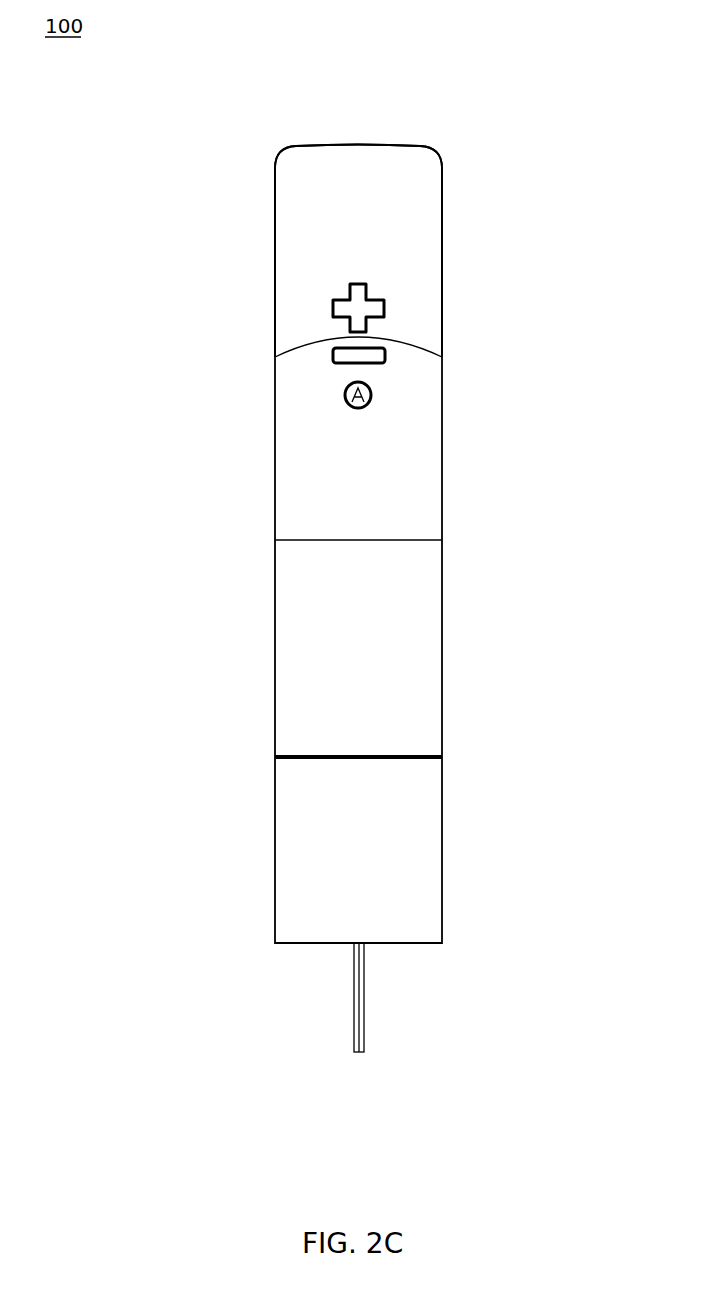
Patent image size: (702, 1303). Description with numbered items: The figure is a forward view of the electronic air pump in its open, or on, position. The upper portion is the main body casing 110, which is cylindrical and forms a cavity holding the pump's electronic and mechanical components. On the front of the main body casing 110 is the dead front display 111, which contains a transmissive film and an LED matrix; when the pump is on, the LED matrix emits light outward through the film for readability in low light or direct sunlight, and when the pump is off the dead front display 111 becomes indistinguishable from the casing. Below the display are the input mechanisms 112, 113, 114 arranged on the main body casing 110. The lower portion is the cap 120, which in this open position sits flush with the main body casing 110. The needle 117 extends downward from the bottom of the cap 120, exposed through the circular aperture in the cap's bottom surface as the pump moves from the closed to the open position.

The main body casing 110 is at (449, 326).
The dead front display 111 is at (321, 224).
The input mechanism 112 is at (324, 302).
The input mechanism 113 is at (324, 348).
The input mechanism 114 is at (334, 388).
The needle 117 is at (371, 985).
The cap 120 is at (449, 821).